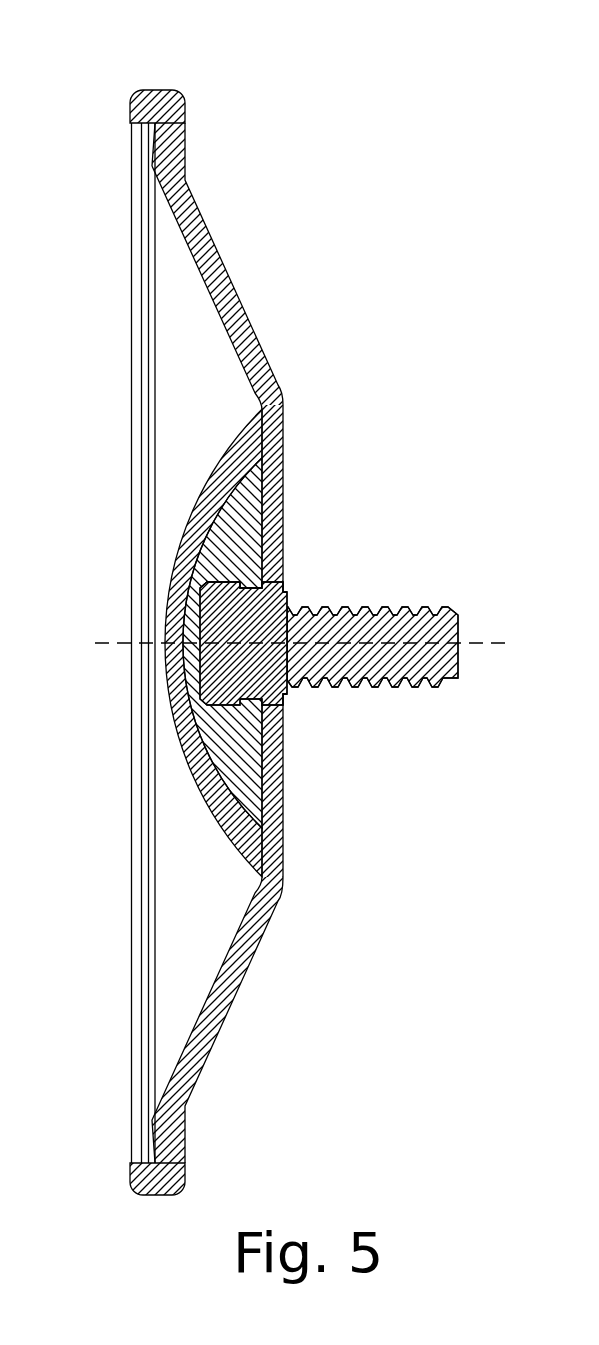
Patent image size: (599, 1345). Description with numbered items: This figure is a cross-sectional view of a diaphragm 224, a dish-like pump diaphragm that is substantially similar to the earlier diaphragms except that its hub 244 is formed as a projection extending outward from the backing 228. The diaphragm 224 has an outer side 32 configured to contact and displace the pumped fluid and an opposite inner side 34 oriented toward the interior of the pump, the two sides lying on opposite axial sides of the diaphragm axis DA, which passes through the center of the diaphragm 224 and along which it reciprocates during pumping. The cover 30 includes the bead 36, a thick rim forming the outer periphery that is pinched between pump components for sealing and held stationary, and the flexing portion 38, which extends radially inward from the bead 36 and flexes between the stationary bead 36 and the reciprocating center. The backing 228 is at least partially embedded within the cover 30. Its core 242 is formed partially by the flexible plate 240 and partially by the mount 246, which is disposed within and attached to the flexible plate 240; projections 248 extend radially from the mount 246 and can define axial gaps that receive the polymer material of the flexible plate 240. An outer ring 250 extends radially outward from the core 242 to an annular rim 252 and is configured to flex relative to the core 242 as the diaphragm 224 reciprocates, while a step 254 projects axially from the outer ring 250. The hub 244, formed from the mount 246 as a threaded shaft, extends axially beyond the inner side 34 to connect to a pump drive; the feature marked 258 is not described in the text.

The diaphragm 224 is at (270, 600).
The cover 30 is at (211, 610).
The outer side 32 is at (172, 265).
The inner side 34 is at (211, 246).
The bead 36 is at (158, 97).
The flexing portion 38 is at (252, 982).
The backing 228 is at (256, 610).
The flexible plate 240 is at (296, 553).
The core 242 is at (288, 725).
The hub 244 is at (403, 601).
The mount 246 is at (283, 700).
The projections 248 is at (281, 552).
The outer ring 250 is at (248, 807).
The annular rim 252 is at (265, 835).
The step 254 is at (273, 567).
The recess 258 is at (218, 573).
The diaphragm axis DA is at (98, 643).